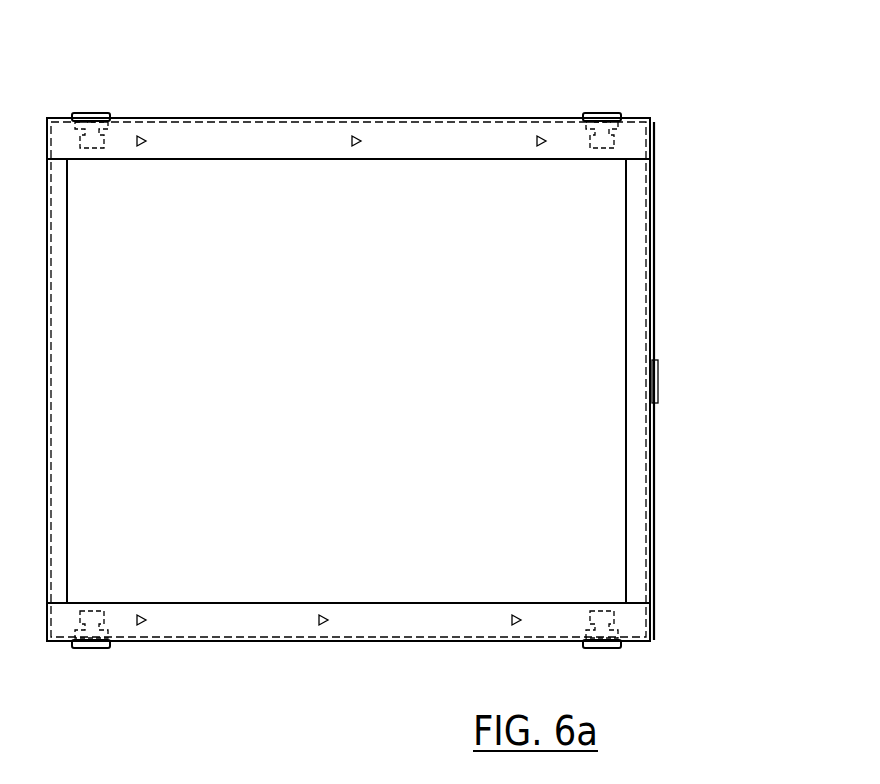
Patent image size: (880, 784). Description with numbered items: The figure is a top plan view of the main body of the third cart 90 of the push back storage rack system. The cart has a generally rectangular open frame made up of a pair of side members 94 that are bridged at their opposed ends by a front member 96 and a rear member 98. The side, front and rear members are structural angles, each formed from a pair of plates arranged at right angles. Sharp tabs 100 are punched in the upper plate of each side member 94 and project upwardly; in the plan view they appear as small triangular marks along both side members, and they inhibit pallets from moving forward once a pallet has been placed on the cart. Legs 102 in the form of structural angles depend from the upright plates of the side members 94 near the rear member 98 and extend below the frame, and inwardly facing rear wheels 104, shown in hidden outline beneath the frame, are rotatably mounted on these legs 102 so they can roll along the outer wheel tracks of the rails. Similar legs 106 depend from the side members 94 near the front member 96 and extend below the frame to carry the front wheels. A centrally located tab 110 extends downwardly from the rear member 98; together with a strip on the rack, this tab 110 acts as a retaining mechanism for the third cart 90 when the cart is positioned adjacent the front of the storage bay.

The third cart 90 is at (702, 86).
The side members 94 is at (332, 130).
The front member 96 is at (62, 412).
The rear member 98 is at (643, 285).
The sharp tabs 100 is at (358, 147).
The legs 102 is at (602, 112).
The rear wheels 104 is at (598, 148).
The legs 106 is at (96, 113).
The tab 110 is at (657, 387).